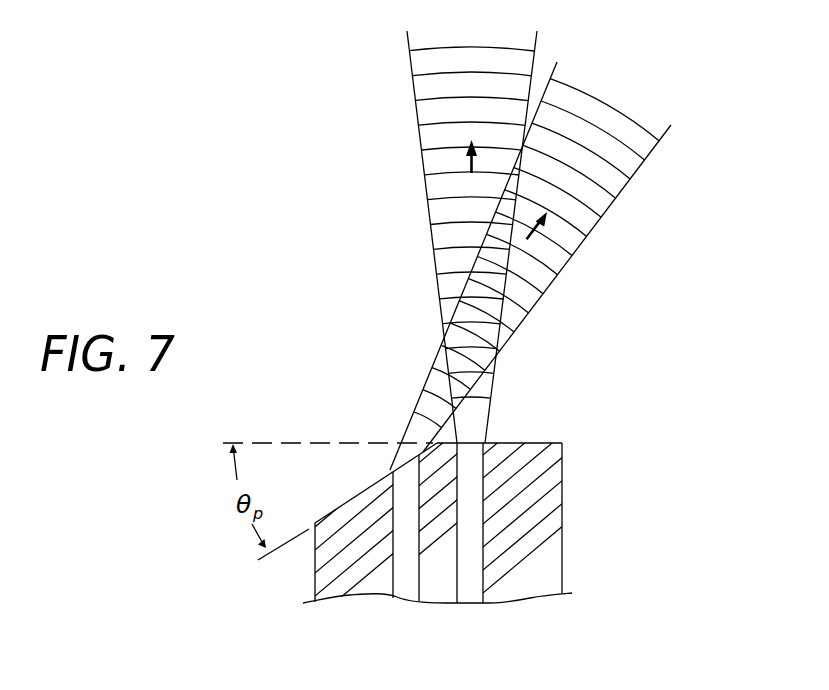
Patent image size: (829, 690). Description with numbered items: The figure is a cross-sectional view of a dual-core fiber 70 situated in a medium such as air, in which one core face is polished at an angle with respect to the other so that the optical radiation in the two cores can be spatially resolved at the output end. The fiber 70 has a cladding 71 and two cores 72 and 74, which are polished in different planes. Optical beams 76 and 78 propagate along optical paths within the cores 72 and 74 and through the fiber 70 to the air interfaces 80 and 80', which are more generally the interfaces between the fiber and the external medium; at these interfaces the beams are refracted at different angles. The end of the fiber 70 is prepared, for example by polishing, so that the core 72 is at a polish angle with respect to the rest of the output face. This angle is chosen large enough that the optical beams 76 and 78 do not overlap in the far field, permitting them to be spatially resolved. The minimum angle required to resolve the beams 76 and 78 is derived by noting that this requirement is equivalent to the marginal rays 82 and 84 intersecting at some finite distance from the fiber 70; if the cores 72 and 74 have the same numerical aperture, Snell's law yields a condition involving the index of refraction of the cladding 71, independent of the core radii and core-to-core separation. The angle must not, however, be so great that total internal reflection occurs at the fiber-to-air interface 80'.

The fiber 70 is at (306, 573).
The cladding 71 is at (542, 470).
The core 72 is at (407, 582).
The core 74 is at (473, 587).
The optical beam 76 is at (573, 220).
The optical beam 78 is at (453, 190).
The air interface 80 is at (516, 420).
The air interface 80' is at (367, 483).
The marginal ray 82 is at (557, 72).
The marginal ray 84 is at (537, 57).